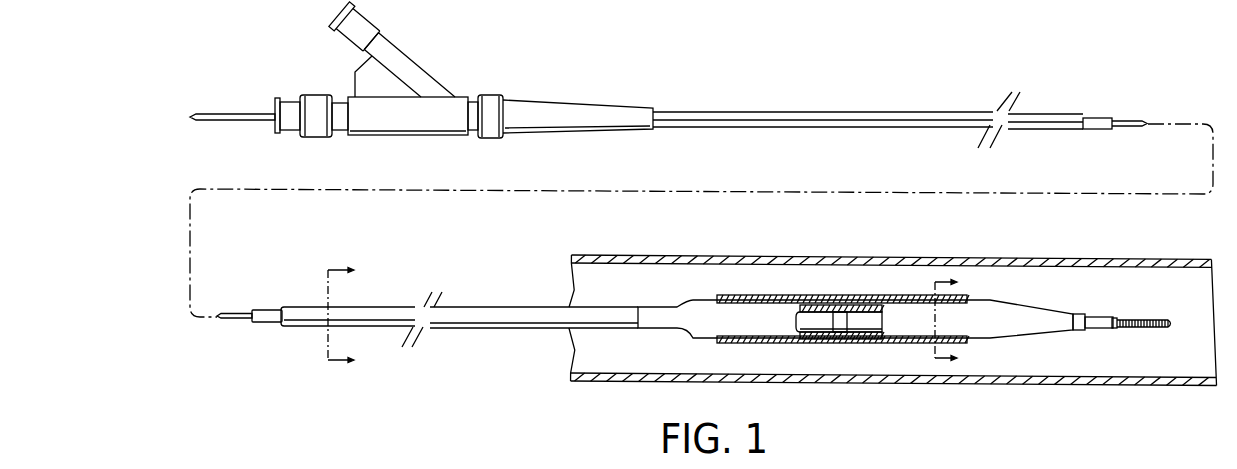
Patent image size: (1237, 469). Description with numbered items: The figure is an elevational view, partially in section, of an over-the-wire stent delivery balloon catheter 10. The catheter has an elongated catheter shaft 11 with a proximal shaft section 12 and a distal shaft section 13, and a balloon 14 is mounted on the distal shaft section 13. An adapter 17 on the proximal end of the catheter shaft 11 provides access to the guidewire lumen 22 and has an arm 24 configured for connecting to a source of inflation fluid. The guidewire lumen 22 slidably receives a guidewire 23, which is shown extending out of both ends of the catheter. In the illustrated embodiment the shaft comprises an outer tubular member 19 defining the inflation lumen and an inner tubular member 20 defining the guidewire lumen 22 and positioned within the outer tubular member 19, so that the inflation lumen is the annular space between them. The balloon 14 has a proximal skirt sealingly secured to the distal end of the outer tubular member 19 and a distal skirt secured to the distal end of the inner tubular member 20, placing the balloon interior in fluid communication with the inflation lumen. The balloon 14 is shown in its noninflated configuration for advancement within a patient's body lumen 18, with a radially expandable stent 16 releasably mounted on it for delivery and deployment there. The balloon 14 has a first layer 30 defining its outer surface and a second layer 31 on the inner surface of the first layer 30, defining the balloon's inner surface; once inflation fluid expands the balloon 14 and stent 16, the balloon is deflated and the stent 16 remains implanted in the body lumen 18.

The stent delivery balloon catheter 10 is at (950, 70).
The catheter shaft 11 is at (873, 127).
The proximal shaft section 12 is at (682, 110).
The distal shaft section 13 is at (557, 306).
The balloon 14 is at (680, 302).
The radially expandable stent 16 is at (858, 298).
The adapter 17 is at (352, 96).
The body lumen 18 is at (612, 262).
The outer tubular member 19 is at (1040, 122).
The inner tubular member 20 is at (1098, 118).
The guidewire lumen 22 is at (1120, 328).
The guidewire 23 is at (251, 112).
The arm 24 is at (397, 45).
The first layer 30 is at (858, 340).
The second layer 31 is at (810, 337).